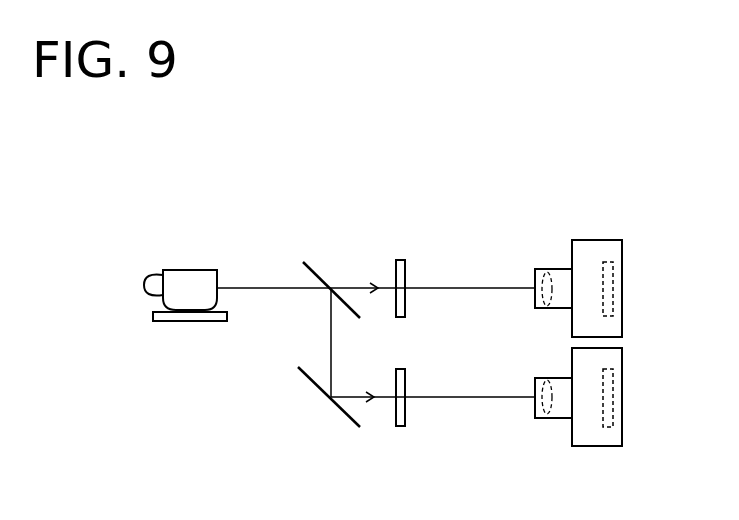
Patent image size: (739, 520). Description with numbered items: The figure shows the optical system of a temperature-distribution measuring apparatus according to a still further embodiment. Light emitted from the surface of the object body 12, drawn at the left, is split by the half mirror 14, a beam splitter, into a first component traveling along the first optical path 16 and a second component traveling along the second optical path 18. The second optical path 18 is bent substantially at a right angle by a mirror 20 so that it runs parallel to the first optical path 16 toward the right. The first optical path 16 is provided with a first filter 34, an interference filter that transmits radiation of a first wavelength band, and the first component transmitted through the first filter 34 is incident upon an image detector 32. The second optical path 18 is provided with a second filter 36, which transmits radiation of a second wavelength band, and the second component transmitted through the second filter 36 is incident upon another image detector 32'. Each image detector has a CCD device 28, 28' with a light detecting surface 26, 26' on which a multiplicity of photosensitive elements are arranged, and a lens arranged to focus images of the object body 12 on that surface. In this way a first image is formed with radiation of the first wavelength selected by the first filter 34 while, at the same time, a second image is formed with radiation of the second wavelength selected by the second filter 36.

The object body 12 is at (183, 280).
The half mirror 14 is at (315, 266).
The first optical path 16 is at (442, 288).
The second optical path 18 is at (427, 397).
The mirror 20 is at (306, 378).
The light detecting surface 26 is at (569, 250).
The light detecting surface 26' is at (568, 428).
The CCD device 28 is at (634, 282).
The CCD device 28' is at (635, 384).
The image detector 32 is at (626, 265).
The image detector 32' is at (628, 418).
The first filter 34 is at (400, 268).
The second filter 36 is at (402, 428).